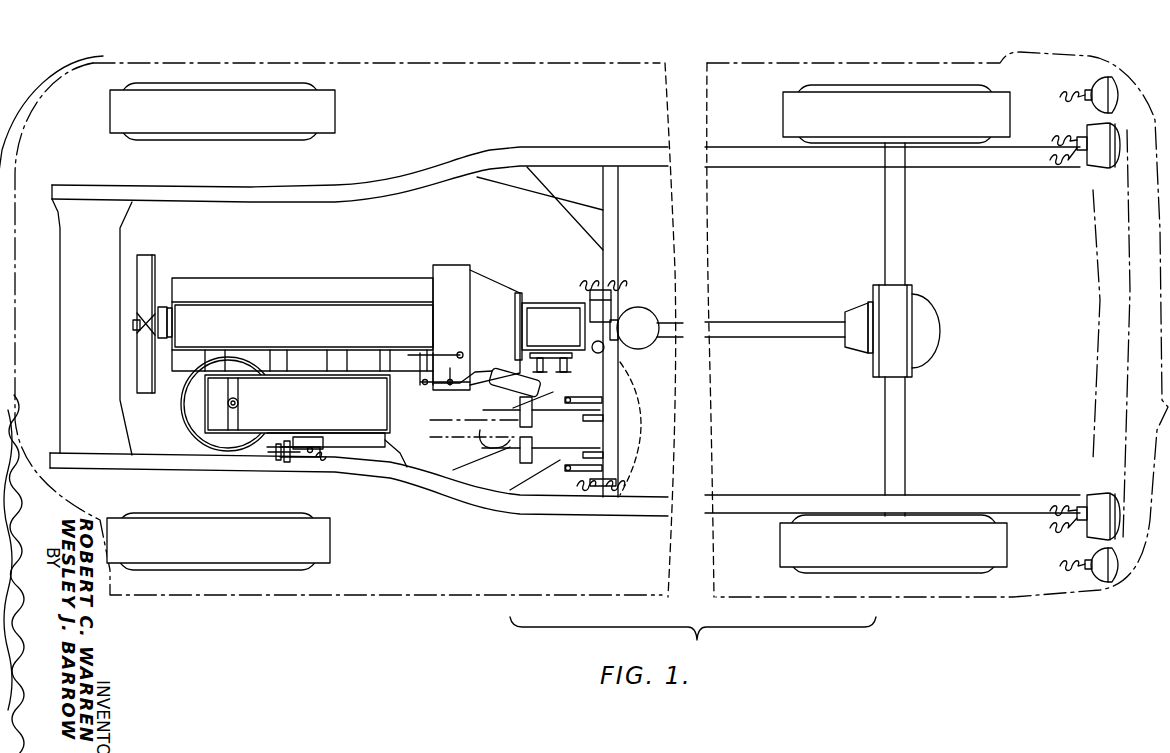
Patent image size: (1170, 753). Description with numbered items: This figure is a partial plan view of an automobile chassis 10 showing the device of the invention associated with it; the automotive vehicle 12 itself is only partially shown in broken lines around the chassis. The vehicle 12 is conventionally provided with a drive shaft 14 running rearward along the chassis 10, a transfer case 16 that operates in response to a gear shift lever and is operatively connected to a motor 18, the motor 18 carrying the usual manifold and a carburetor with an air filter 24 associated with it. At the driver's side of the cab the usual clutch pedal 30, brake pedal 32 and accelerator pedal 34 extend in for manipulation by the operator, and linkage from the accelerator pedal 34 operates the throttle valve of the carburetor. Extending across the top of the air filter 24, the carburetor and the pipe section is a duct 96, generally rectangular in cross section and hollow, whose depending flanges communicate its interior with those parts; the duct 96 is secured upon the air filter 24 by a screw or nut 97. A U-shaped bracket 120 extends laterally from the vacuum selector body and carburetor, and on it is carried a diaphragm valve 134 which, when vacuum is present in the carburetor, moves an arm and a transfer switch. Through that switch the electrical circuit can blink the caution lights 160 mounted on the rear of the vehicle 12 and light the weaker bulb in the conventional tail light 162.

The chassis 10 is at (487, 146).
The automotive vehicle 12 is at (1148, 106).
The drive shaft 14 is at (762, 321).
The transfer case 16 is at (543, 304).
The motor 18 is at (307, 278).
The air filter 24 is at (189, 428).
The clutch pedal 30 is at (516, 458).
The brake pedal 32 is at (518, 420).
The accelerator pedal 34 is at (496, 387).
The duct 96 is at (298, 408).
The screw or nut 97 is at (239, 404).
The U-shaped bracket 120 is at (374, 446).
The diaphragm valve 134 is at (282, 462).
The caution lights 160 is at (1107, 77).
The tail light 162 is at (1092, 124).